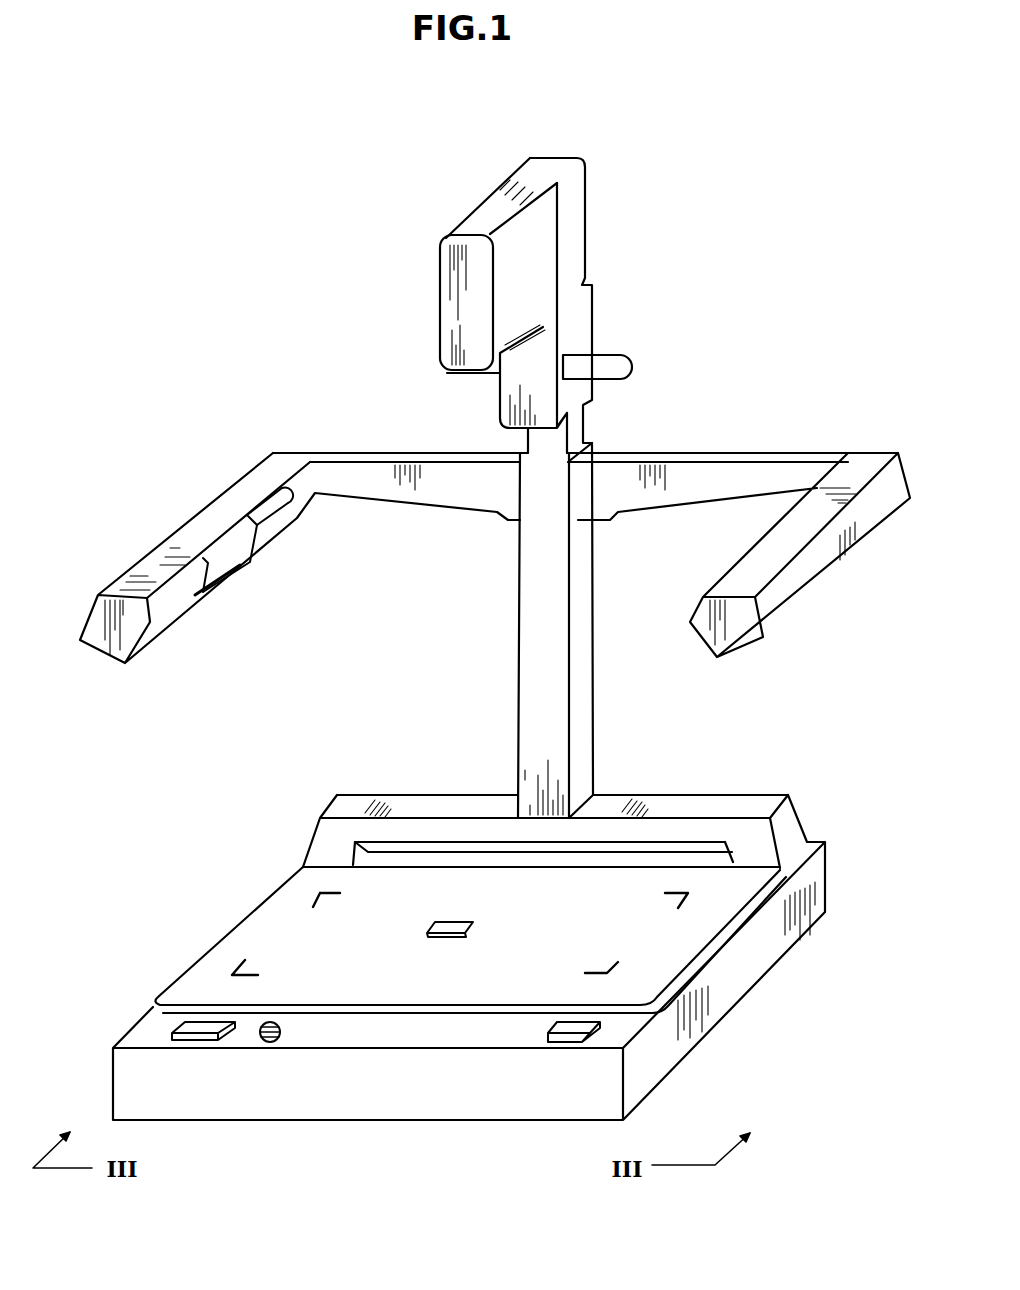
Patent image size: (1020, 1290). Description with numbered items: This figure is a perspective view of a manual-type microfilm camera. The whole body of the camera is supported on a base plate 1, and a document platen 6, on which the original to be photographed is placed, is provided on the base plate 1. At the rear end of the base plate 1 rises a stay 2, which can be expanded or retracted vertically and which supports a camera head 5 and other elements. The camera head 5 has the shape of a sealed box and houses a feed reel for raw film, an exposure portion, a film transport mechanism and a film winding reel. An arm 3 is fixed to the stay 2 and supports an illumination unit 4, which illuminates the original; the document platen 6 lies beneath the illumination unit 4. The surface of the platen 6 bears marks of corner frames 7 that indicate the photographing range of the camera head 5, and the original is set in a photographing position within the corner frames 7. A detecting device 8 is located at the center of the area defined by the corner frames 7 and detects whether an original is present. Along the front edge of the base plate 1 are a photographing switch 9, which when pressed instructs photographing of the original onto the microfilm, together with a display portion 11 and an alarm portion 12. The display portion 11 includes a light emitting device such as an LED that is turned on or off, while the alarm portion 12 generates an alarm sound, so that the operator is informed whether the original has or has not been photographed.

The base plate 1 is at (717, 1000).
The stay 2 is at (547, 733).
The arm 3 is at (430, 497).
The illumination unit 4 is at (196, 597).
The camera head 5 is at (542, 268).
The document platen 6 is at (702, 925).
The corner frames 7 is at (243, 961).
The detecting device 8 is at (440, 937).
The photographing switch 9 is at (567, 1043).
The display portion 11 is at (197, 1042).
The alarm portion 12 is at (270, 1042).